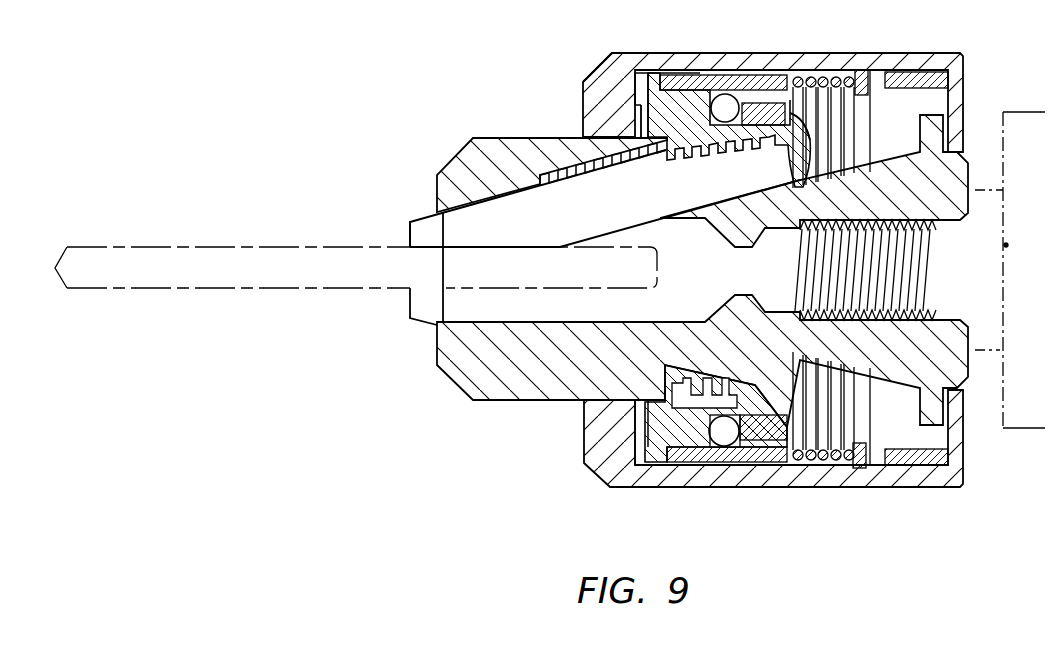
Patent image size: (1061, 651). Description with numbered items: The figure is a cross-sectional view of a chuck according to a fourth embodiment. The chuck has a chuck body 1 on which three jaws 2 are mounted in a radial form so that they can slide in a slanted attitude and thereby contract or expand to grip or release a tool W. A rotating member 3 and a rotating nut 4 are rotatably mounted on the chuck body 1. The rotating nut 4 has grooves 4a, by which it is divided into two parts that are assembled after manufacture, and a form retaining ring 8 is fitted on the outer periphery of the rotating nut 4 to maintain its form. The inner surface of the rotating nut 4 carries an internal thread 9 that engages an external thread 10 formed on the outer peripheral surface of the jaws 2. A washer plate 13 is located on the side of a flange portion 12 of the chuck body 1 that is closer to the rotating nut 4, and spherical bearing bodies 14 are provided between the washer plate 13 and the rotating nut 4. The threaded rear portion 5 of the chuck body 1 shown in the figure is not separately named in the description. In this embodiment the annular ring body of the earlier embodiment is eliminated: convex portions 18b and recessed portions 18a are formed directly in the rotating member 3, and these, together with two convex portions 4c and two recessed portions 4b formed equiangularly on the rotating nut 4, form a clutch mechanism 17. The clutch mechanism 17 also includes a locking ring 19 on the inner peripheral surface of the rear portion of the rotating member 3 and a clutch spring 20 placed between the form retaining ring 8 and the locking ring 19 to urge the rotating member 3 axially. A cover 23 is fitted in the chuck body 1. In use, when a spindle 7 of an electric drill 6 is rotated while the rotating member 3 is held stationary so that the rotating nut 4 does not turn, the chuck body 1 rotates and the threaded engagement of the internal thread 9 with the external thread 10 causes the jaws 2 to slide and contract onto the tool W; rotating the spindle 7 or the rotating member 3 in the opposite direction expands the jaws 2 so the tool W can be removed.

The chuck body 1 is at (463, 382).
The jaws 2 is at (408, 228).
The rotating member 3 is at (583, 465).
The rotating nut 4 is at (672, 118).
The grooves 4a is at (682, 92).
The recessed portions 4b is at (660, 100).
The convex portions 4c is at (640, 122).
The threaded portion 5 is at (870, 226).
The electric drill 6 is at (1012, 430).
The spindle 7 is at (1000, 352).
The form retaining ring 8 is at (747, 83).
The internal thread 9 is at (720, 157).
The external thread 10 is at (580, 183).
The flange portion 12 is at (790, 125).
The washer plate 13 is at (783, 77).
The spherical bearing bodies 14 is at (727, 438).
The clutch mechanism 17 is at (622, 88).
The recessed portions 18a is at (640, 105).
The convex portions 18b is at (637, 115).
The locking ring 19 is at (860, 468).
The clutch spring 20 is at (843, 462).
The cover 23 is at (957, 97).
The tool W is at (163, 278).